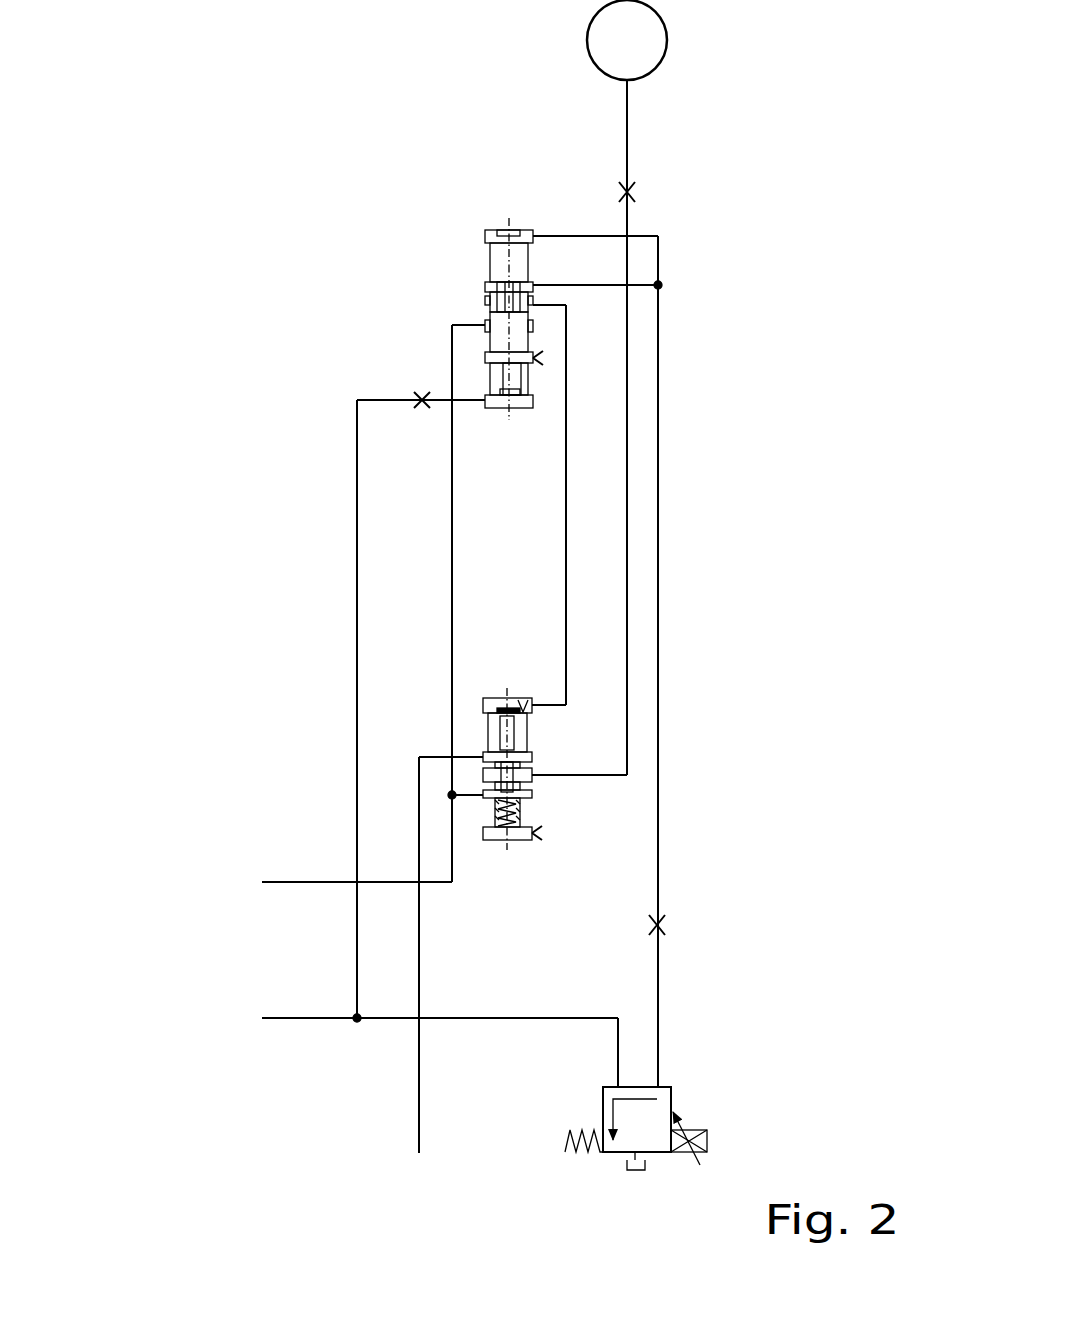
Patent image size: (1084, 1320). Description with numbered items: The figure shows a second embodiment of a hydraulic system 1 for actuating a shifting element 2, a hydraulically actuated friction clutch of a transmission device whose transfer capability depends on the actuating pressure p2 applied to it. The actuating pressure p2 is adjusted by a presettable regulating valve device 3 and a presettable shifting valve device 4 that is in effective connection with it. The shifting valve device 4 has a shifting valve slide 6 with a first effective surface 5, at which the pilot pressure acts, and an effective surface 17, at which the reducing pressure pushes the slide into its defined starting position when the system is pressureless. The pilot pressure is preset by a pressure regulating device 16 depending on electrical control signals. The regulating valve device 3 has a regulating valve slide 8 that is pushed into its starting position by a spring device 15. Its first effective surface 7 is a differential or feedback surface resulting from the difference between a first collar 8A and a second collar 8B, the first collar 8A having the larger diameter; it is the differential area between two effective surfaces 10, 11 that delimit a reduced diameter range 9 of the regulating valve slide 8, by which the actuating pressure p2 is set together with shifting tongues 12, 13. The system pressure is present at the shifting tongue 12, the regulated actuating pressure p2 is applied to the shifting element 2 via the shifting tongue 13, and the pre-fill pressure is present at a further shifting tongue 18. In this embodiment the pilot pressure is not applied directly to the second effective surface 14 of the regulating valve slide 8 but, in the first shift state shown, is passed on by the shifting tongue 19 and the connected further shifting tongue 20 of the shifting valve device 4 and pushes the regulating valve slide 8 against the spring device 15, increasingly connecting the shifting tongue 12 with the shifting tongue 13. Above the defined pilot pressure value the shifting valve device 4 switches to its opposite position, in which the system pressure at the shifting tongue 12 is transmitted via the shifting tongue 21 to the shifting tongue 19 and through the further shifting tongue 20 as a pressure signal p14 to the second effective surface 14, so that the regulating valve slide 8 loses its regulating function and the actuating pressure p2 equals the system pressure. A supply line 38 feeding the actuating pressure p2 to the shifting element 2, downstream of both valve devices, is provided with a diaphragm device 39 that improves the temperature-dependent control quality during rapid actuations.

The hydraulic system 1 is at (285, 80).
The shifting element 2 is at (648, 32).
The regulating valve device 3 is at (560, 843).
The shifting valve device 4 is at (359, 258).
The first effective surface 5 is at (488, 230).
The shifting valve slide 6 is at (485, 270).
The first effective surface 7 is at (490, 867).
The regulating valve slide 8 is at (498, 727).
The first collar 8A is at (530, 742).
The second collar 8B is at (527, 808).
The reduced diameter range 9 is at (530, 786).
The effective surface 10 is at (483, 777).
The effective surface 11 is at (483, 783).
The shifting tongue 12 is at (483, 800).
The shifting tongue 13 is at (483, 780).
The second effective surface 14 is at (525, 712).
The spring device 15 is at (515, 840).
The pressure regulating device 16 is at (672, 1090).
The effective surface 17 is at (522, 398).
The further shifting tongue 18 is at (532, 782).
The shifting tongue 19 is at (535, 290).
The further shifting tongue 20 is at (535, 308).
The shifting tongue 21 is at (485, 322).
The supply line 38 is at (627, 222).
The diaphragm device 39 is at (633, 200).
The actuating pressure p2 is at (627, 123).
The pressure signal p14 is at (566, 550).